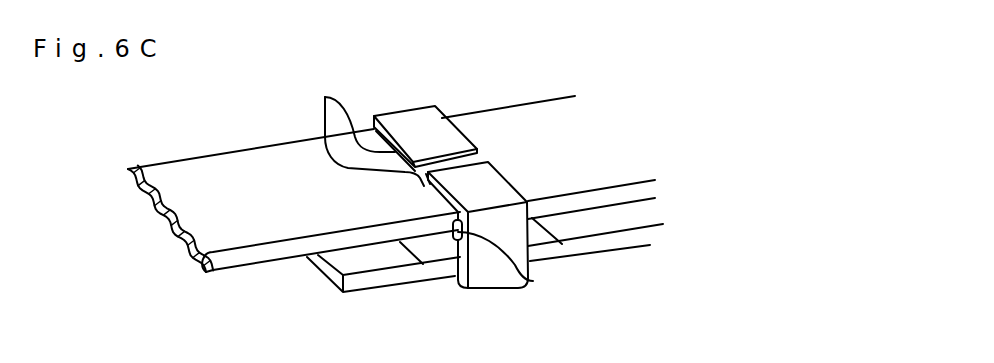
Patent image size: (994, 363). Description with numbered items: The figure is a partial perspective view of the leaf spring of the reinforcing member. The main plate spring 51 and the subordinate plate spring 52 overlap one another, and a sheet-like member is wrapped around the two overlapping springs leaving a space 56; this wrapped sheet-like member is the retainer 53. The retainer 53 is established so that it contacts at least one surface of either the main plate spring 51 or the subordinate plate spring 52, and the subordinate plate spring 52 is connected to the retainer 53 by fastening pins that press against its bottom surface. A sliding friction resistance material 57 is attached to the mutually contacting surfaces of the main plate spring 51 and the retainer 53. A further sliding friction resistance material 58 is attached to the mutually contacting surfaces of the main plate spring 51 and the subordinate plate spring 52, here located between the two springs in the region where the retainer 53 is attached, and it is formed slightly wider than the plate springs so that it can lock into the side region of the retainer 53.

The main plate spring 51 is at (180, 172).
The subordinate plate spring 52 is at (382, 278).
The retainer 53 is at (518, 273).
The space 56 is at (478, 156).
The sliding friction resistance material 57 is at (325, 97).
The sliding friction resistance material 58 is at (435, 258).